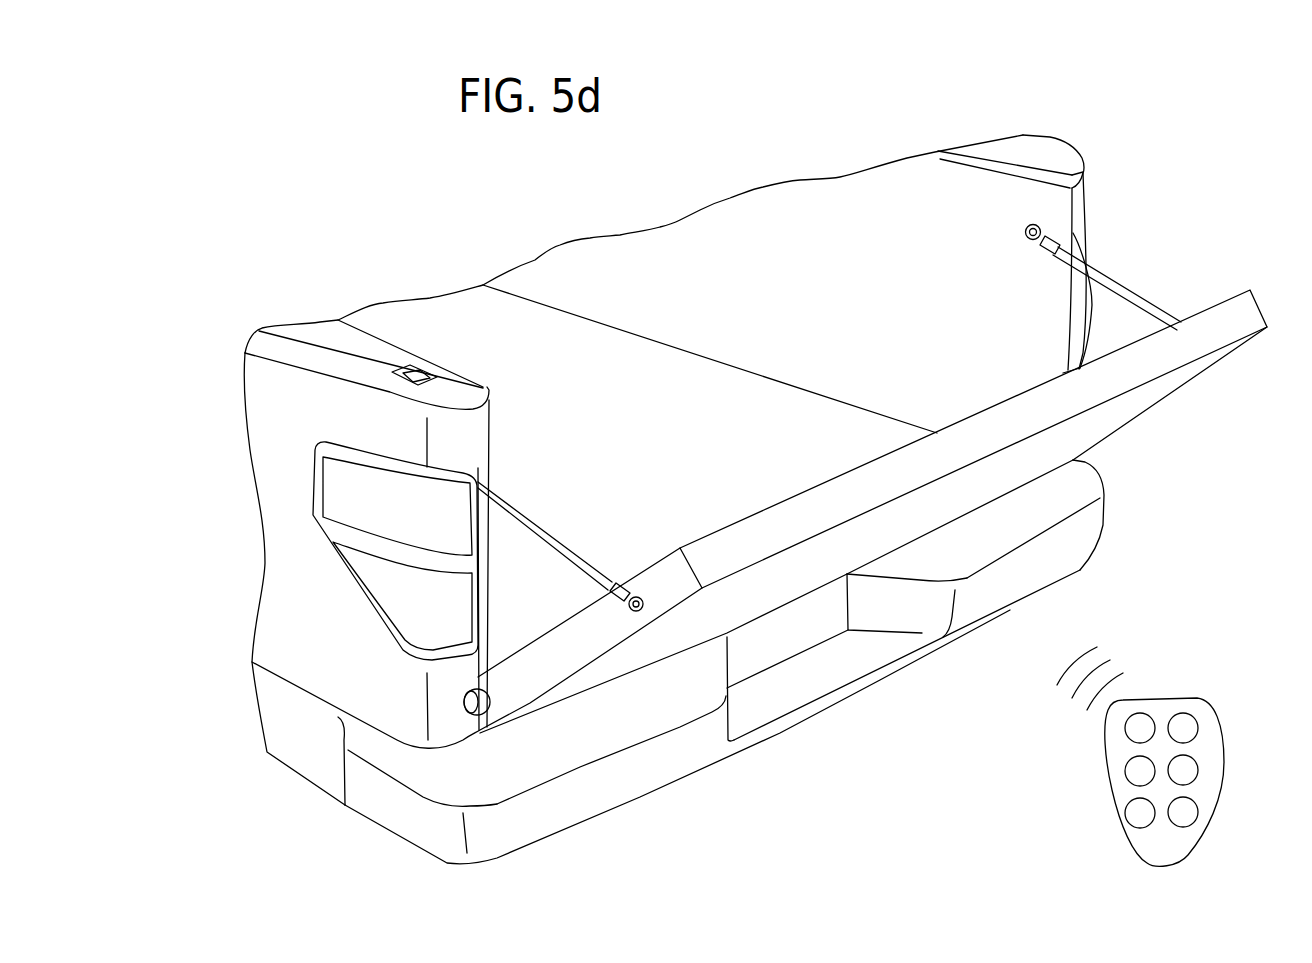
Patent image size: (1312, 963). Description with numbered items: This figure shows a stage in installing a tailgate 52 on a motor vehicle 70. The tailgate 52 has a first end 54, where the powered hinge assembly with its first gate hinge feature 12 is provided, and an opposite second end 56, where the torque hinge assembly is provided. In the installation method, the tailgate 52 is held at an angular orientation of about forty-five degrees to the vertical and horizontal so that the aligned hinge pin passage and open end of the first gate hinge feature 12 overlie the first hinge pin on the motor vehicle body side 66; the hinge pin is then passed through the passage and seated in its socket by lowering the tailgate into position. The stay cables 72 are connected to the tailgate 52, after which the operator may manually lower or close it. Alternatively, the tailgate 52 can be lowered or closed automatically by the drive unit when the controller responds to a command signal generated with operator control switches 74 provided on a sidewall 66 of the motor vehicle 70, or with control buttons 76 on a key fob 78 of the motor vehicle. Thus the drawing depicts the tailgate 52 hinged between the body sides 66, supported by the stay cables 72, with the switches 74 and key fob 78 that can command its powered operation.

The first gate hinge feature 12 is at (462, 722).
The tailgate 52 is at (765, 588).
The first end 54 is at (552, 650).
The second end 56 is at (1178, 386).
The motor vehicle body side 66 is at (350, 667).
The motor vehicle 70 is at (195, 338).
The stay cables 72 is at (556, 538).
The operator control switches 74 is at (396, 375).
The control buttons 76 is at (1186, 816).
The key fob 78 is at (1170, 761).